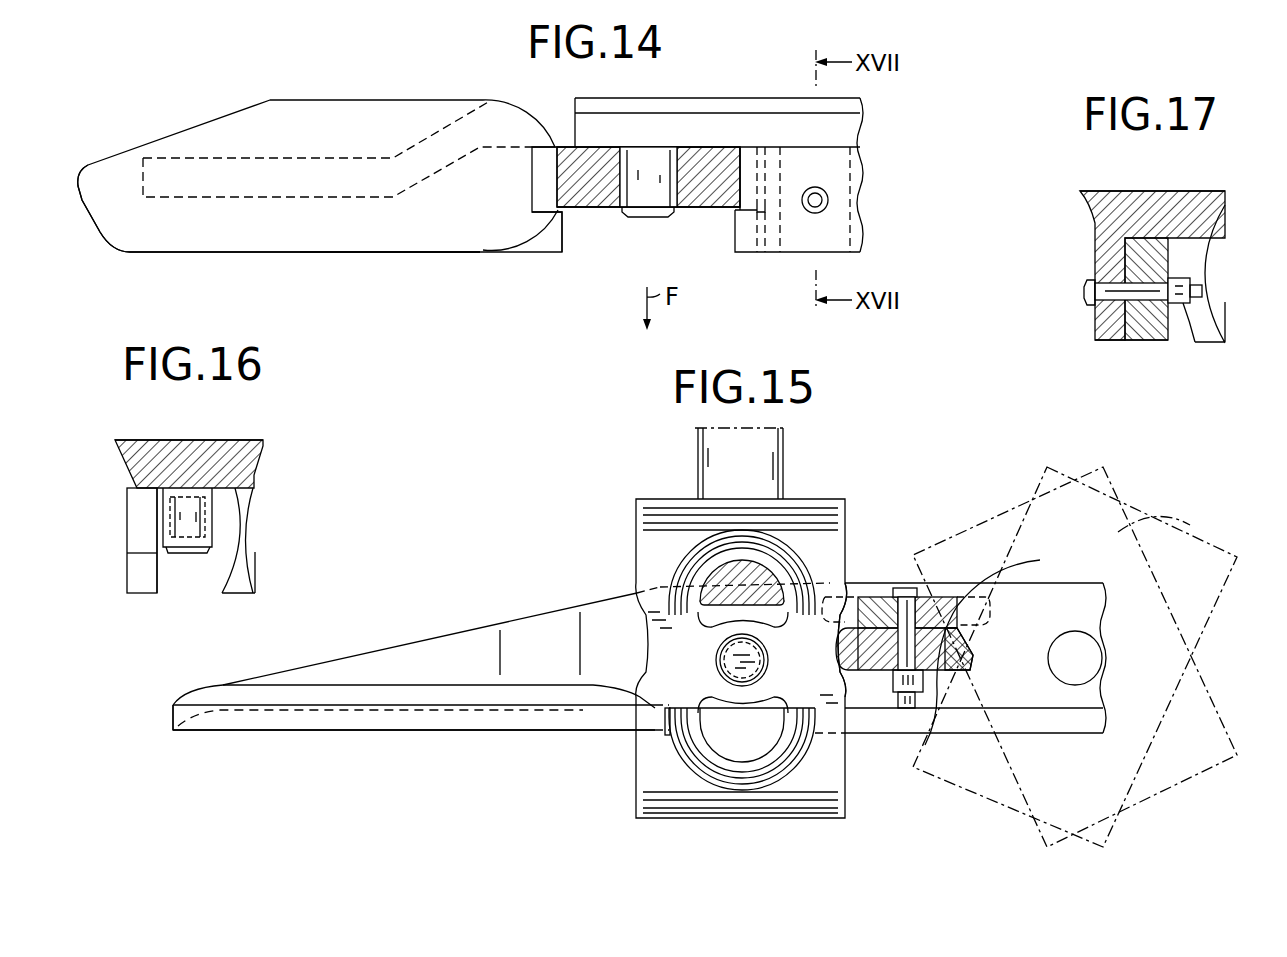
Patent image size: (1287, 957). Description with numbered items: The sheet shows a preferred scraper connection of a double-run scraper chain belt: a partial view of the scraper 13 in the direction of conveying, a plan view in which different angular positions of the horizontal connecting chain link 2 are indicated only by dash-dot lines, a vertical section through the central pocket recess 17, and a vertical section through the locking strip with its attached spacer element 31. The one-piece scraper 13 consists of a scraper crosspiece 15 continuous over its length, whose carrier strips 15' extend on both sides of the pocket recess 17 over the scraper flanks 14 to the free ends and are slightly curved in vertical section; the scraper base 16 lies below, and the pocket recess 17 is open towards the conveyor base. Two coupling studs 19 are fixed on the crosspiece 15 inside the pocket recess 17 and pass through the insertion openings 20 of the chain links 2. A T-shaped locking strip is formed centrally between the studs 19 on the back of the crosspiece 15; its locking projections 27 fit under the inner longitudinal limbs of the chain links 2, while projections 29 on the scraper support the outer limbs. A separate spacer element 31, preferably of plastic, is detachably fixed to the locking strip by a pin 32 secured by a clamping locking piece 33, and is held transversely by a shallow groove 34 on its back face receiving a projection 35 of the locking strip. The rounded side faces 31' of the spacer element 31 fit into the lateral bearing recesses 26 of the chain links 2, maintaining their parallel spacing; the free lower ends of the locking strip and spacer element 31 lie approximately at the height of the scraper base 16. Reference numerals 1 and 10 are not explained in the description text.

In FIG. 15, the drive stem 1 is at (770, 455).
In FIG. 14, the horizontal connecting chain link 2 is at (588, 190).
In FIG. 15, the horizontal connecting chain link 2 is at (640, 795).
In FIG. 15, the clamping housing 10 is at (645, 498).
In FIG. 14, the scraper 13 is at (198, 108).
In FIG. 15, the scraper 13 is at (290, 750).
In FIG. 16, the scraper 13 is at (285, 440).
In FIG. 17, the scraper 13 is at (1096, 208).
In FIG. 14, the scraper flank 14 is at (360, 247).
In FIG. 15, the scraper flank 14 is at (415, 653).
In FIG. 14, the scraper crosspiece 15 is at (697, 156).
In FIG. 16, the scraper crosspiece 15 is at (189, 439).
In FIG. 17, the scraper crosspiece 15 is at (1152, 243).
In FIG. 14, the carrier strip 15' is at (305, 259).
In FIG. 15, the carrier strip 15' is at (414, 750).
In FIG. 16, the carrier strip 15' is at (263, 540).
In FIG. 17, the carrier strip 15' is at (1232, 274).
In FIG. 14, the scraper base 16 is at (215, 254).
In FIG. 14, the pocket recess 17 is at (614, 245).
In FIG. 15, the pocket recess 17 is at (882, 695).
In FIG. 16, the pocket recess 17 is at (180, 585).
In FIG. 14, the coupling stud 19 is at (660, 190).
In FIG. 15, the coupling stud 19 is at (735, 656).
In FIG. 16, the coupling stud 19 is at (170, 542).
In FIG. 14, the insertion opening 20 is at (620, 188).
In FIG. 15, the insertion opening 20 is at (718, 672).
In FIG. 15, the bearing recess 26 is at (830, 653).
In FIG. 14, the locking projection 27 is at (740, 243).
In FIG. 15, the locking projection 27 is at (832, 595).
In FIG. 16, the locking projection 27 is at (138, 580).
In FIG. 14, the projection 29 is at (550, 240).
In FIG. 14, the spacer element 31 is at (795, 226).
In FIG. 15, the spacer element 31 is at (975, 678).
In FIG. 17, the spacer element 31 is at (1151, 354).
In FIG. 15, the rounded side face 31' is at (921, 643).
In FIG. 14, the pin 32 is at (828, 200).
In FIG. 15, the pin 32 is at (910, 607).
In FIG. 17, the pin 32 is at (1107, 292).
In FIG. 15, the locking piece 33 is at (908, 694).
In FIG. 17, the locking piece 33 is at (1182, 285).
In FIG. 15, the groove 34 is at (978, 658).
In FIG. 15, the projection 35 is at (999, 645).